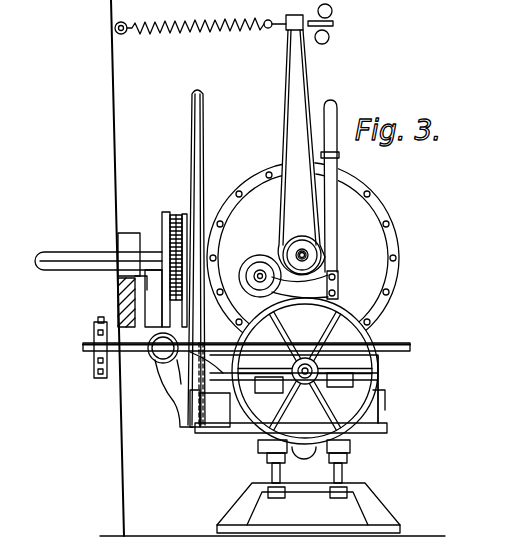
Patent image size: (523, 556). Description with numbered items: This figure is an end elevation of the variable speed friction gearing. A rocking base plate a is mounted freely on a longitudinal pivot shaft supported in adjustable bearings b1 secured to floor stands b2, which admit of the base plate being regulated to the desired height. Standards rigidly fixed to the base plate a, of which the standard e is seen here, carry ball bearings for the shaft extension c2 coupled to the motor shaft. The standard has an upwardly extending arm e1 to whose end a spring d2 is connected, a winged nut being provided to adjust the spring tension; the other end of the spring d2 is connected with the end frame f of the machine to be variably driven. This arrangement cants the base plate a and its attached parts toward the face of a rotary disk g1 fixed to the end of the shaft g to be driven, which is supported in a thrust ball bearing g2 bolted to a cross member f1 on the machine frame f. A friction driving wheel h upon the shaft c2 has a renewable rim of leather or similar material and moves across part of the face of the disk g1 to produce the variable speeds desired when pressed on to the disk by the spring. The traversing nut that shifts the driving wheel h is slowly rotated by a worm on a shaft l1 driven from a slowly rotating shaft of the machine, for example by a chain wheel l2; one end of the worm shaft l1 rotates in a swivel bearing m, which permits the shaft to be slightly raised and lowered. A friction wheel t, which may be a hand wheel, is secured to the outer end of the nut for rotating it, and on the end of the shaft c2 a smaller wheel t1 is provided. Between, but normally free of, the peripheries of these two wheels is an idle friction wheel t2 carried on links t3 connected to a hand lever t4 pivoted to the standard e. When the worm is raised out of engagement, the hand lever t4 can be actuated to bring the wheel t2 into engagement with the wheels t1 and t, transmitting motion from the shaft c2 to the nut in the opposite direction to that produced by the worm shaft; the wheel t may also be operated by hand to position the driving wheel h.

The end frame f is at (121, 268).
The springs d2 is at (178, 32).
The upwardly extending arm e1 is at (306, 71).
The shaft extension c2 is at (308, 252).
The smaller wheel t1 is at (322, 259).
The hand lever t4 is at (330, 106).
The friction driving wheel h is at (313, 258).
The idle friction wheel t2 is at (258, 268).
The links t3 is at (307, 287).
The rotary disk g1 is at (204, 97).
The shaft to be driven g is at (80, 252).
The cross member f1 is at (118, 300).
The thrust ball bearing g2 is at (178, 212).
The worm shaft l1 is at (409, 343).
The chain wheel l2 is at (94, 362).
The swivel bearing m is at (152, 360).
The rocking base plate a is at (379, 386).
The friction wheel t is at (378, 366).
The standard e is at (325, 356).
The adjustable bearings b1 is at (351, 446).
The floor stands b2 is at (362, 497).